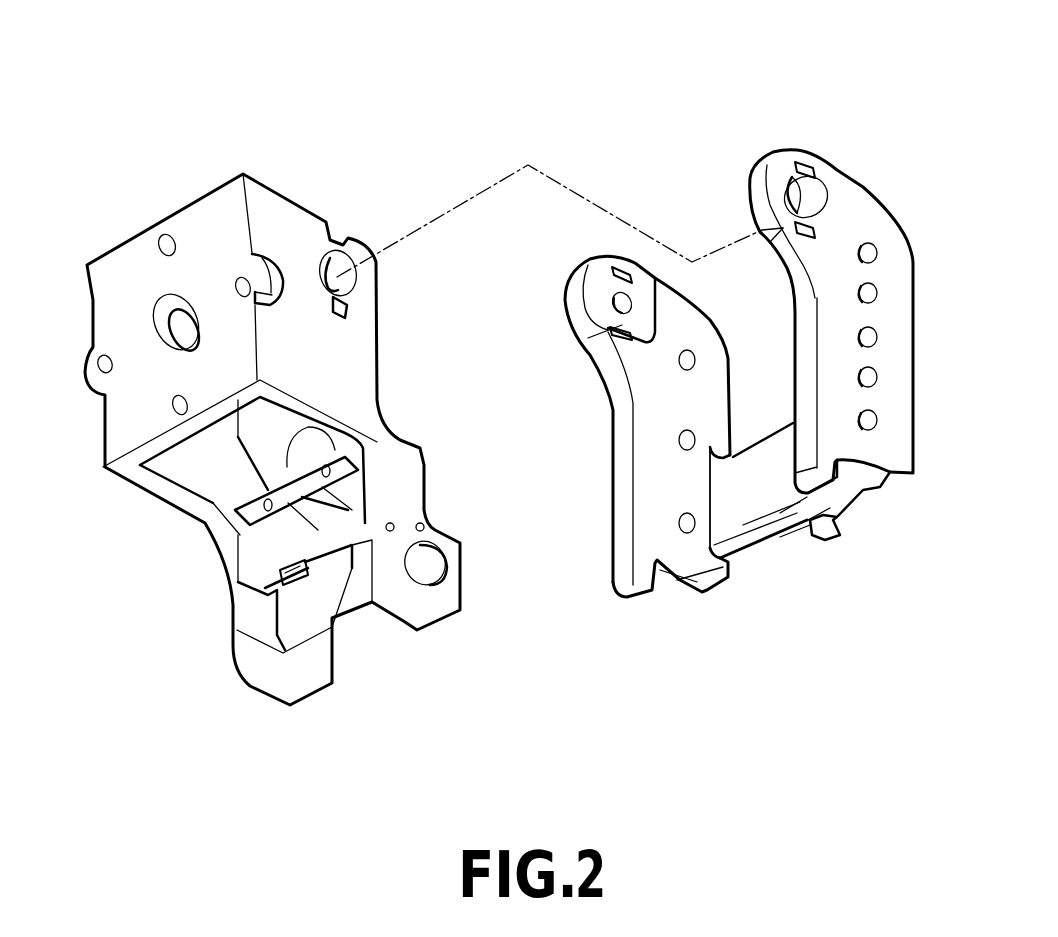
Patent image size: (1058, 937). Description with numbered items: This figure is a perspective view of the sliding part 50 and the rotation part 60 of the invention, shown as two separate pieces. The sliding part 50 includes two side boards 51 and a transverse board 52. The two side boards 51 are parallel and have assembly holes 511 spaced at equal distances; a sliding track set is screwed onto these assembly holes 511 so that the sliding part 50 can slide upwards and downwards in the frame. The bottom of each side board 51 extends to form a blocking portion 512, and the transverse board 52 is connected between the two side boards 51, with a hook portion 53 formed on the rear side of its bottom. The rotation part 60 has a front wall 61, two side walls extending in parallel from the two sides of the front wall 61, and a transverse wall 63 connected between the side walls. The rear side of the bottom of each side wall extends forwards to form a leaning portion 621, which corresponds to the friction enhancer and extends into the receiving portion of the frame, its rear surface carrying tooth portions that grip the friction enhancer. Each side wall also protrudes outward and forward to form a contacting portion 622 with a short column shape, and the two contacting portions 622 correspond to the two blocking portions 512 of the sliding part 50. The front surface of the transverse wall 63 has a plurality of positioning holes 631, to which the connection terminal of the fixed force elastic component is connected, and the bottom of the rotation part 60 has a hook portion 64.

The sliding part 50 is at (770, 150).
The side board 51 is at (843, 203).
The assembly hole 511 is at (873, 243).
The blocking portion 512 is at (640, 600).
The transverse board 52 is at (748, 507).
The hook portion 53 is at (830, 537).
The rotation part 60 is at (303, 192).
The front wall 61 is at (200, 222).
The transverse wall 63 is at (305, 425).
The positioning hole 631 is at (330, 465).
The leaning portion 621 is at (407, 613).
The contacting portion 622 is at (457, 547).
The hook portion 64 is at (295, 570).